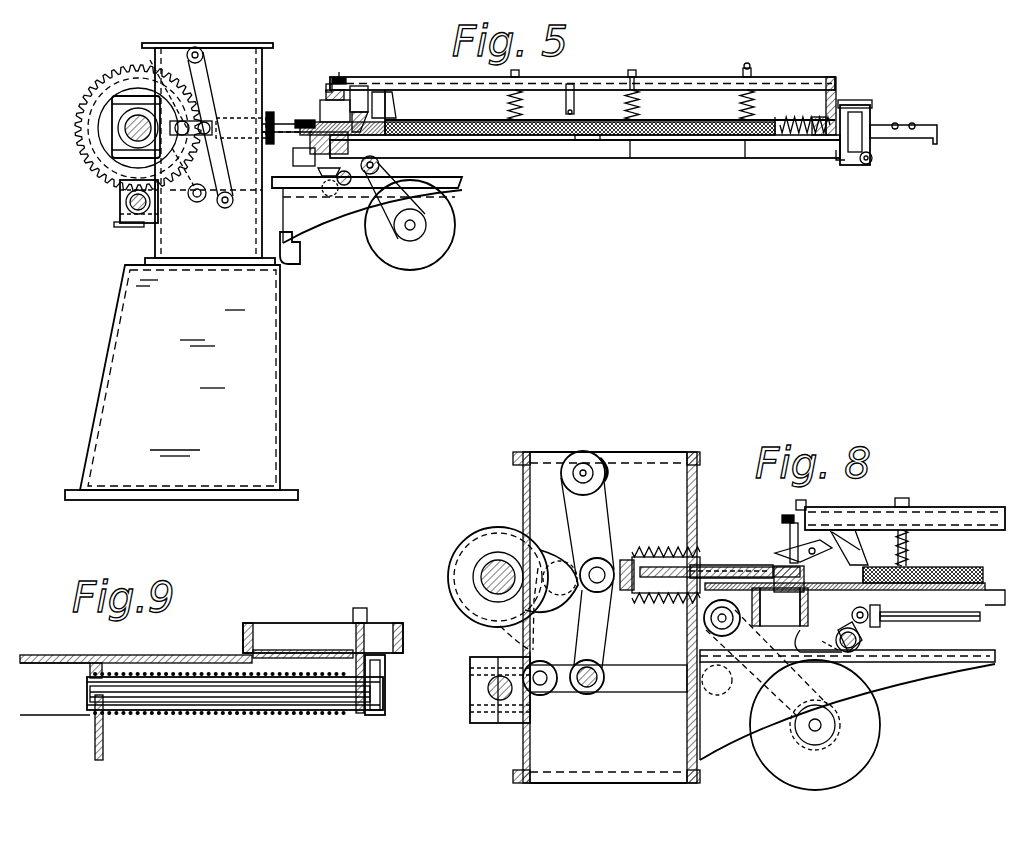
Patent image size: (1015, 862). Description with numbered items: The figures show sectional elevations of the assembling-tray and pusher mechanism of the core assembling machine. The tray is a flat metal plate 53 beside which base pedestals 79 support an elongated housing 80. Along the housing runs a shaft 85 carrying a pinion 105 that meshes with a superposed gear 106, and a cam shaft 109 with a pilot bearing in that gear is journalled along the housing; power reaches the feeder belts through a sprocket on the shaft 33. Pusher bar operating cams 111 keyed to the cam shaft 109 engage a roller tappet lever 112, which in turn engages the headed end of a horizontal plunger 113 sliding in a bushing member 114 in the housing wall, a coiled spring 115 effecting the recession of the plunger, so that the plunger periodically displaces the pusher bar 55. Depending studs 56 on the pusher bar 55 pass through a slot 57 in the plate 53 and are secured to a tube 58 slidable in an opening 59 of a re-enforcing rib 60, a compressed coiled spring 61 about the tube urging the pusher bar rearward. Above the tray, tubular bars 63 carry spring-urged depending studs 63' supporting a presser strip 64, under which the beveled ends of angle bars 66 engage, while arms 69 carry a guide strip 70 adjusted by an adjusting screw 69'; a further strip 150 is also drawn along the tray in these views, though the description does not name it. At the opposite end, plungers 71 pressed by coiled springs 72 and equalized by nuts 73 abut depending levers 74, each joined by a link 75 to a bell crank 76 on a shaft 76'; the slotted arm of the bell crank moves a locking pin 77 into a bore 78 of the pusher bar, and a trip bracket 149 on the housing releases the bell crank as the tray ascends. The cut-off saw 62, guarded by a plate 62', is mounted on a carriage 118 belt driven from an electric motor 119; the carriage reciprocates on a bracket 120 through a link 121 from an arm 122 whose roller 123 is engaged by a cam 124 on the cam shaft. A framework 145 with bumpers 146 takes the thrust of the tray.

In FIG. 5, the shaft 33 is at (587, 143).
In FIG. 8, the shaft 33 is at (792, 568).
In FIG. 5, the flat metal plate 53 is at (304, 130).
In FIG. 8, the flat metal plate 53 is at (990, 592).
In FIG. 9, the flat metal plate 53 is at (38, 656).
In FIG. 9, the pusher bar 55 is at (272, 632).
In FIG. 9, the depending studs 56 is at (362, 715).
In FIG. 9, the slot 57 is at (316, 640).
In FIG. 9, the tube 58 is at (270, 705).
In FIG. 9, the opening 59 is at (96, 715).
In FIG. 9, the re-enforcing rib 60 is at (104, 746).
In FIG. 9, the compressed coiled spring 61 is at (165, 712).
In FIG. 5, the cut-off saw 62 is at (315, 151).
In FIG. 8, the cut-off saw 62 is at (721, 657).
In FIG. 5, the plate 62' is at (312, 86).
In FIG. 8, the plate 62' is at (765, 531).
In FIG. 5, the tubular bars 63 is at (583, 94).
In FIG. 8, the tubular bars 63 is at (905, 509).
In FIG. 5, the depending studs 63' is at (653, 71).
In FIG. 8, the depending studs 63' is at (914, 520).
In FIG. 5, the presser strip 64 is at (672, 116).
In FIG. 8, the presser strip 64 is at (940, 567).
In FIG. 5, the angle bars 66 is at (574, 100).
In FIG. 5, the arms 69 is at (366, 90).
In FIG. 8, the arms 69 is at (792, 556).
In FIG. 5, the adjusting screw 69' is at (334, 70).
In FIG. 8, the adjusting screw 69' is at (783, 506).
In FIG. 5, the guide strip 70 is at (384, 110).
In FIG. 8, the guide strip 70 is at (849, 547).
In FIG. 5, the plungers 71 is at (818, 117).
In FIG. 5, the coiled springs 72 is at (790, 118).
In FIG. 5, the nuts 73 is at (838, 158).
In FIG. 5, the depending levers 74 is at (870, 152).
In FIG. 5, the link 75 is at (750, 158).
In FIG. 8, the link 75 is at (966, 622).
In FIG. 5, the bell crank 76 is at (323, 188).
In FIG. 8, the bell crank 76 is at (865, 643).
In FIG. 5, the shaft 76' is at (398, 165).
In FIG. 8, the shaft 76' is at (837, 662).
In FIG. 5, the locking pin 77 is at (329, 173).
In FIG. 8, the locking pin 77 is at (780, 607).
In FIG. 5, the bore 78 is at (326, 122).
In FIG. 5, the base pedestals 79 is at (178, 360).
In FIG. 5, the housing 80 is at (250, 68).
In FIG. 8, the housing 80 is at (540, 470).
In FIG. 5, the shaft 85 is at (130, 202).
In FIG. 8, the shaft 85 is at (490, 686).
In FIG. 5, the pinion 105 is at (142, 225).
In FIG. 5, the gear 106 is at (100, 97).
In FIG. 5, the cam shaft 109 is at (133, 125).
In FIG. 8, the cam shaft 109 is at (490, 572).
In FIG. 8, the pusher bar operating cams 111 is at (472, 548).
In FIG. 8, the roller tappet lever 112 is at (598, 646).
In FIG. 5, the horizontal plunger 113 is at (282, 122).
In FIG. 8, the horizontal plunger 113 is at (718, 566).
In FIG. 8, the bushing member 114 is at (686, 548).
In FIG. 8, the coiled spring 115 is at (640, 556).
In FIG. 5, the carriage 118 is at (462, 176).
In FIG. 8, the carriage 118 is at (802, 668).
In FIG. 5, the electric motor 119 is at (436, 232).
In FIG. 8, the electric motor 119 is at (856, 732).
In FIG. 5, the bracket 120 is at (312, 215).
In FIG. 8, the bracket 120 is at (918, 670).
In FIG. 8, the link 121 is at (608, 690).
In FIG. 8, the arm 122 is at (580, 520).
In FIG. 8, the roller 123 is at (582, 562).
In FIG. 8, the cam 124 is at (525, 650).
In FIG. 5, the framework 145 is at (922, 125).
In FIG. 5, the bumpers 146 is at (856, 106).
In FIG. 5, the trip bracket 149 is at (290, 250).
In FIG. 5, the strip 150 is at (472, 118).
In FIG. 8, the strip 150 is at (986, 575).